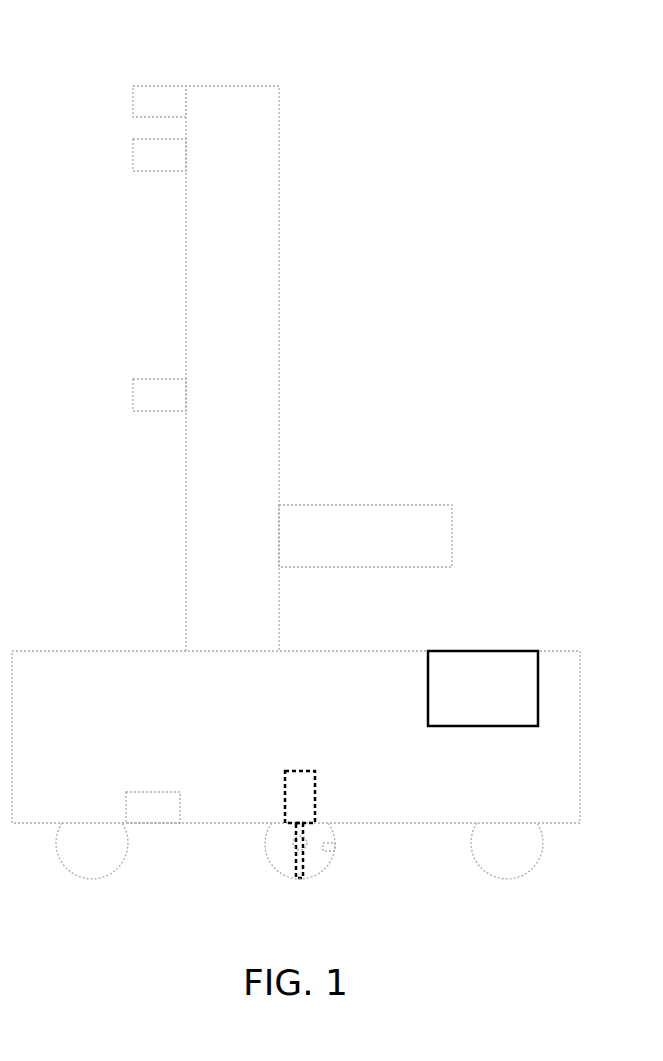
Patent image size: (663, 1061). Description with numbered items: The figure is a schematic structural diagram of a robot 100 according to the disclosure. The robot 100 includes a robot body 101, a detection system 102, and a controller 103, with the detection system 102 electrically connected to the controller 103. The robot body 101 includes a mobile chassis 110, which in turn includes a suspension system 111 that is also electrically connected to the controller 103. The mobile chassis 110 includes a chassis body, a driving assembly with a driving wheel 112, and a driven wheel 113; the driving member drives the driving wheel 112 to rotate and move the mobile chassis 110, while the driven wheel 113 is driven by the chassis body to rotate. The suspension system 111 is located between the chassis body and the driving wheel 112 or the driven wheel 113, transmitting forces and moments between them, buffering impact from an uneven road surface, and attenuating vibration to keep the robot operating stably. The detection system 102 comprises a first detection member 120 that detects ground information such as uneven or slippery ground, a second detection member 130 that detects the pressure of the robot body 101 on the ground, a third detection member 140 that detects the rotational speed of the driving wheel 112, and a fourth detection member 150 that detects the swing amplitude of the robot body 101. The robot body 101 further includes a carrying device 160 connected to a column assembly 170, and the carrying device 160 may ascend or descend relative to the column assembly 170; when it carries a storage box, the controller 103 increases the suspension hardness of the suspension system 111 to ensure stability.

The robot 100 is at (238, 60).
The robot body 101 is at (274, 70).
The detection system 102 is at (368, 123).
The controller 103 is at (498, 651).
The mobile chassis 110 is at (90, 663).
The suspension system 111 is at (302, 771).
The driving wheel 112 is at (273, 848).
The driven wheel 113 is at (96, 860).
The first detection member 120 is at (133, 103).
The second detection member 130 is at (300, 880).
The third detection member 140 is at (336, 847).
The fourth detection member 150 is at (133, 157).
The carrying device 160 is at (452, 535).
The column assembly 170 is at (280, 352).